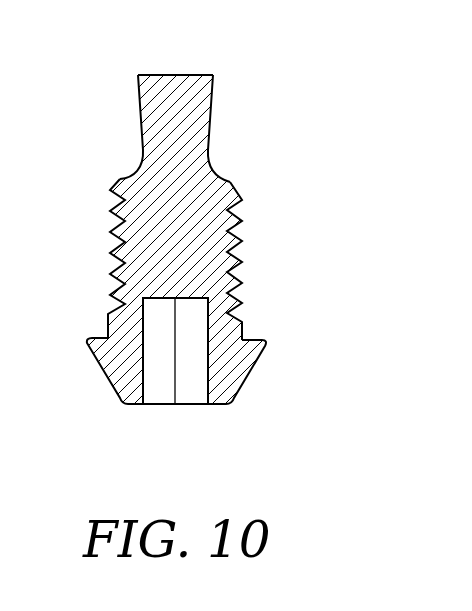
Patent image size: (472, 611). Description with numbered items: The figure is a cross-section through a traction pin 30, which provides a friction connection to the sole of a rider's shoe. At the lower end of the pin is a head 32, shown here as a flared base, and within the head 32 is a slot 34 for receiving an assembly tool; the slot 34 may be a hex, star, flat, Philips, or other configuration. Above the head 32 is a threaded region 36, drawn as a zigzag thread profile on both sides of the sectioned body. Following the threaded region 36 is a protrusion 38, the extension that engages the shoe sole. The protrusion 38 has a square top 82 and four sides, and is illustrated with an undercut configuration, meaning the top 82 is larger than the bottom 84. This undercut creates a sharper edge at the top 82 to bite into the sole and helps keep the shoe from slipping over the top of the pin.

The traction pin 30 is at (277, 60).
The head 32 is at (252, 368).
The slot 34 is at (190, 387).
The threaded region 36 is at (110, 248).
The protrusion 38 is at (167, 87).
The top 82 is at (188, 75).
The bottom 84 is at (212, 167).